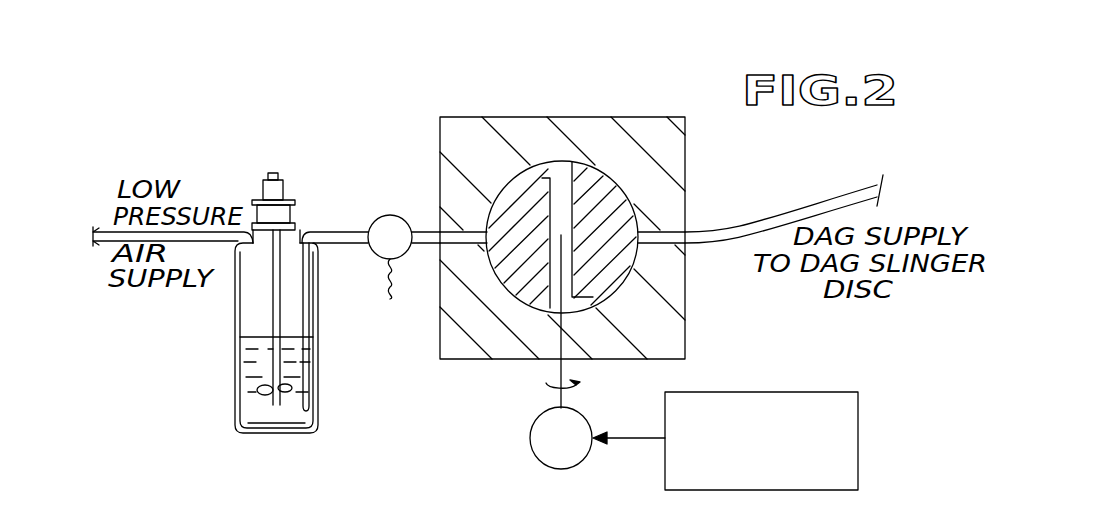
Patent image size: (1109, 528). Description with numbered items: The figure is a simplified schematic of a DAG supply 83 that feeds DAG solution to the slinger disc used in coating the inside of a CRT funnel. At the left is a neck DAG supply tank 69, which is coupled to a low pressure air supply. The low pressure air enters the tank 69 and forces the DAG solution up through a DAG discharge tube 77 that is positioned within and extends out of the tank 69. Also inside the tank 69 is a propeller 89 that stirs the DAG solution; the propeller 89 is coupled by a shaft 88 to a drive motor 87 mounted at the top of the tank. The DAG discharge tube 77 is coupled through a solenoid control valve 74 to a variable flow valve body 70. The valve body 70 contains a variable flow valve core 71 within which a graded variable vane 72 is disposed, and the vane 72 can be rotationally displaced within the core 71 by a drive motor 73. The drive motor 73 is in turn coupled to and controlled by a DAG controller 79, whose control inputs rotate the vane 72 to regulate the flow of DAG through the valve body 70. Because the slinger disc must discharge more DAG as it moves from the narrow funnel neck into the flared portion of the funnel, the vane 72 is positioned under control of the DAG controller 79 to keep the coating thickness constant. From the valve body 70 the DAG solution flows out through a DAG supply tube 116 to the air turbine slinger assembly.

The neck DAG supply tank 69 is at (238, 348).
The variable flow valve body 70 is at (510, 360).
The variable flow valve core 71 is at (612, 192).
The graded variable vane 72 is at (515, 202).
The drive motor 73 is at (548, 468).
The solenoid control valve 74 is at (391, 215).
The DAG discharge tube 77 is at (312, 320).
The DAG controller 79 is at (832, 485).
The DAG supply 83 is at (383, 431).
The drive motor 87 is at (286, 193).
The shaft 88 is at (272, 285).
The propeller 89 is at (268, 388).
The DAG supply tube 116 is at (752, 222).